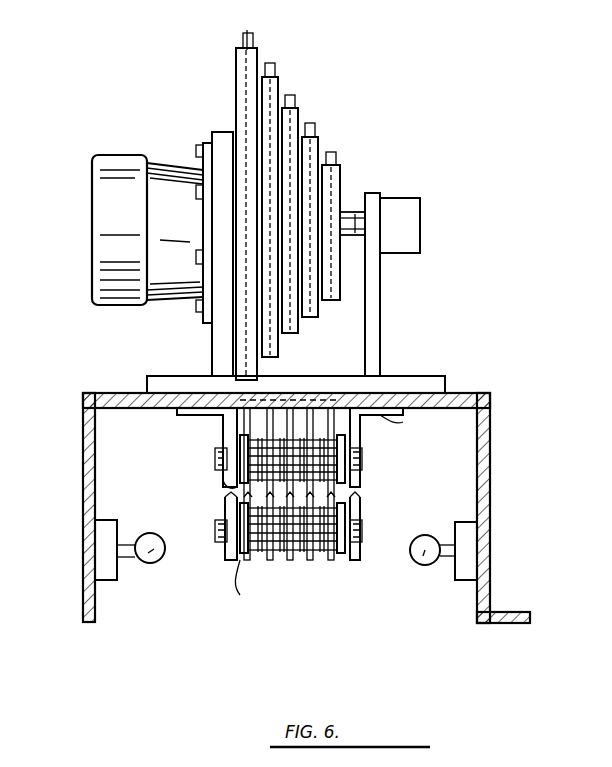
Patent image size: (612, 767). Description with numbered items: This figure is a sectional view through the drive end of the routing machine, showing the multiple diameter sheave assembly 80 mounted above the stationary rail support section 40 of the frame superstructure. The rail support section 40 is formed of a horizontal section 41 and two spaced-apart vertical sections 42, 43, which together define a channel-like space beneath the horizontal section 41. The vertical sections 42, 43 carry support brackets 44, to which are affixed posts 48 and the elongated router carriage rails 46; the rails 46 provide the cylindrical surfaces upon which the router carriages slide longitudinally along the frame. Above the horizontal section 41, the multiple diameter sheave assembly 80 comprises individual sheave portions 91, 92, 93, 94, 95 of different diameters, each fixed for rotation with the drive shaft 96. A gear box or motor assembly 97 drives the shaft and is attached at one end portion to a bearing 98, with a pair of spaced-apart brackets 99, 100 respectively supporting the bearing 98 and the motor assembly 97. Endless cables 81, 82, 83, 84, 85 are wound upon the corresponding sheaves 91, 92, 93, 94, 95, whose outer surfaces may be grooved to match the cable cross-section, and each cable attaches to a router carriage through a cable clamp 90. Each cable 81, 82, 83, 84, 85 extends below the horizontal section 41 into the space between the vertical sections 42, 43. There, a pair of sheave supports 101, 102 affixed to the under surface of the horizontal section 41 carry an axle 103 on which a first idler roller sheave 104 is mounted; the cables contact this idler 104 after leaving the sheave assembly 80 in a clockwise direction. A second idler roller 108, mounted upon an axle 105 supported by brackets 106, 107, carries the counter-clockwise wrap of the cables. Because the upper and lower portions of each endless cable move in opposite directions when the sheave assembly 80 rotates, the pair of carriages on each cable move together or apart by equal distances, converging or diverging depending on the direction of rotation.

The rail support section 40 is at (117, 393).
The horizontal section 41 is at (145, 438).
The vertical section 42 is at (83, 505).
The vertical section 43 is at (490, 478).
The support bracket 44 is at (108, 570).
The router carriage rail 46 is at (152, 560).
The post 48 is at (130, 540).
The multiple diameter sheave assembly 80 is at (118, 100).
The cable 81 is at (246, 88).
The cable 82 is at (268, 96).
The cable 83 is at (292, 145).
The cable 84 is at (320, 162).
The cable 85 is at (336, 196).
The cable clamp 90 is at (372, 45).
The sheave portion 91 is at (236, 62).
The sheave portion 92 is at (266, 90).
The sheave portion 93 is at (285, 124).
The sheave portion 94 is at (318, 150).
The sheave portion 95 is at (340, 173).
The drive shaft 96 is at (352, 238).
The motor assembly 97 is at (105, 228).
The bearing 98 is at (405, 232).
The bracket 99 is at (372, 297).
The bracket 100 is at (218, 334).
The sheave support 101 is at (378, 452).
The sheave support 102 is at (212, 411).
The axle 103 is at (216, 456).
The first idler roller sheave 104 is at (358, 466).
The axle 105 is at (228, 525).
The bracket 106 is at (222, 558).
The bracket 107 is at (370, 532).
The second idler roller 108 is at (248, 558).